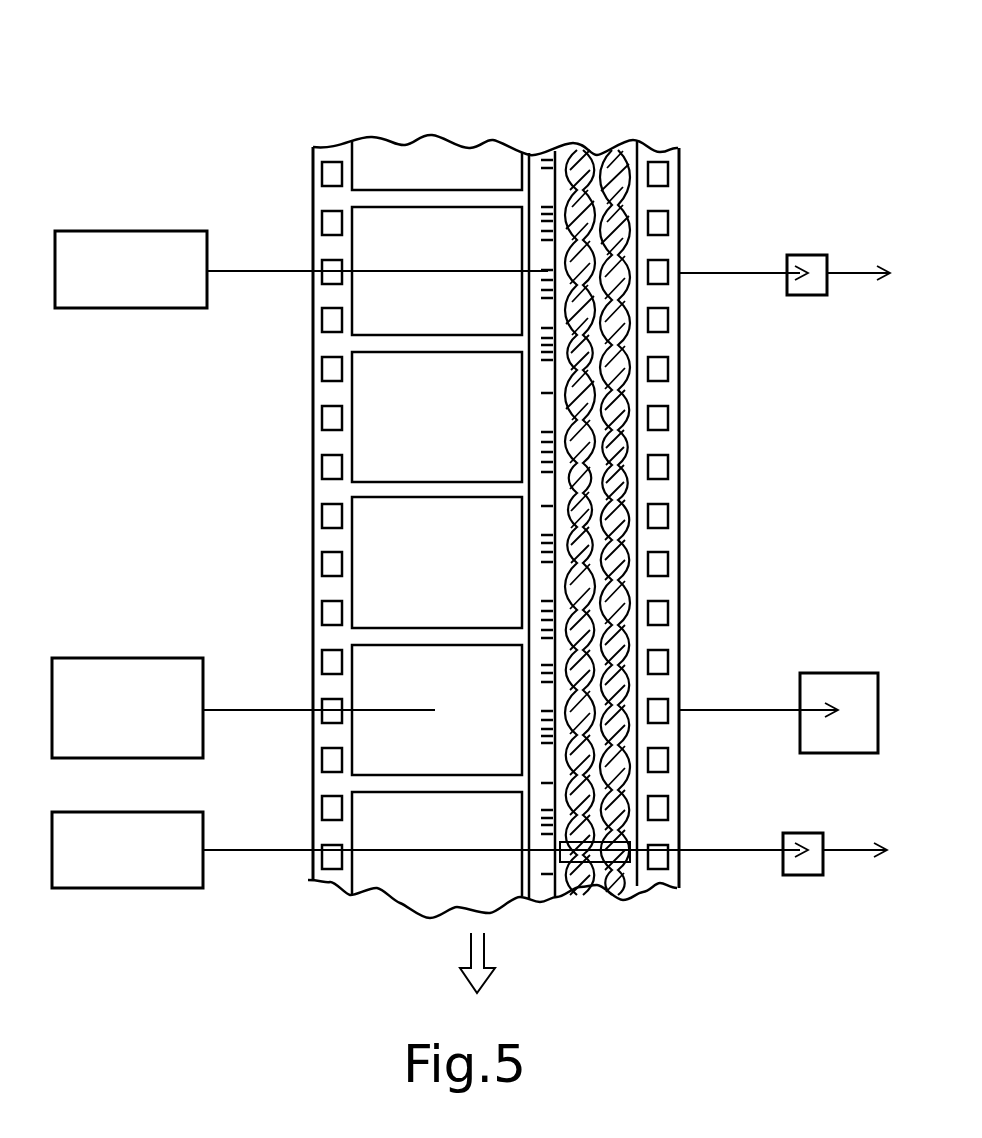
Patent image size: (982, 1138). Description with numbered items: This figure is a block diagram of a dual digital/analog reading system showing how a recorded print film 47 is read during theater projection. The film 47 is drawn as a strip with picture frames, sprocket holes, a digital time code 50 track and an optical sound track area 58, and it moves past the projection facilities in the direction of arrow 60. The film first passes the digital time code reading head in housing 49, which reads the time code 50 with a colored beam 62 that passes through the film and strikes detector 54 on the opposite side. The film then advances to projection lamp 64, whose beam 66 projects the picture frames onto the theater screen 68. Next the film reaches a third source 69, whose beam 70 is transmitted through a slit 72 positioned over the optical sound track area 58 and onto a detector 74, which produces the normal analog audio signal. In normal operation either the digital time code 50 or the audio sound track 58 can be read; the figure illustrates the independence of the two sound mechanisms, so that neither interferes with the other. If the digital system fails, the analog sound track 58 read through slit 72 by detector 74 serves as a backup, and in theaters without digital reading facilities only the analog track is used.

The motion picture film strip 47 is at (393, 116).
The housing 49 is at (130, 231).
The digital time code 50 is at (545, 155).
The detector 54 is at (800, 255).
The optical sound track area 58 is at (600, 158).
The arrow 60 is at (484, 950).
The colored beam 62 is at (250, 271).
The projection lamp 64 is at (133, 658).
The beam 66 is at (250, 710).
The theater screen 68 is at (832, 673).
The third source 69 is at (120, 888).
The beam 70 is at (248, 850).
The slit 72 is at (602, 832).
The detector 74 is at (808, 875).